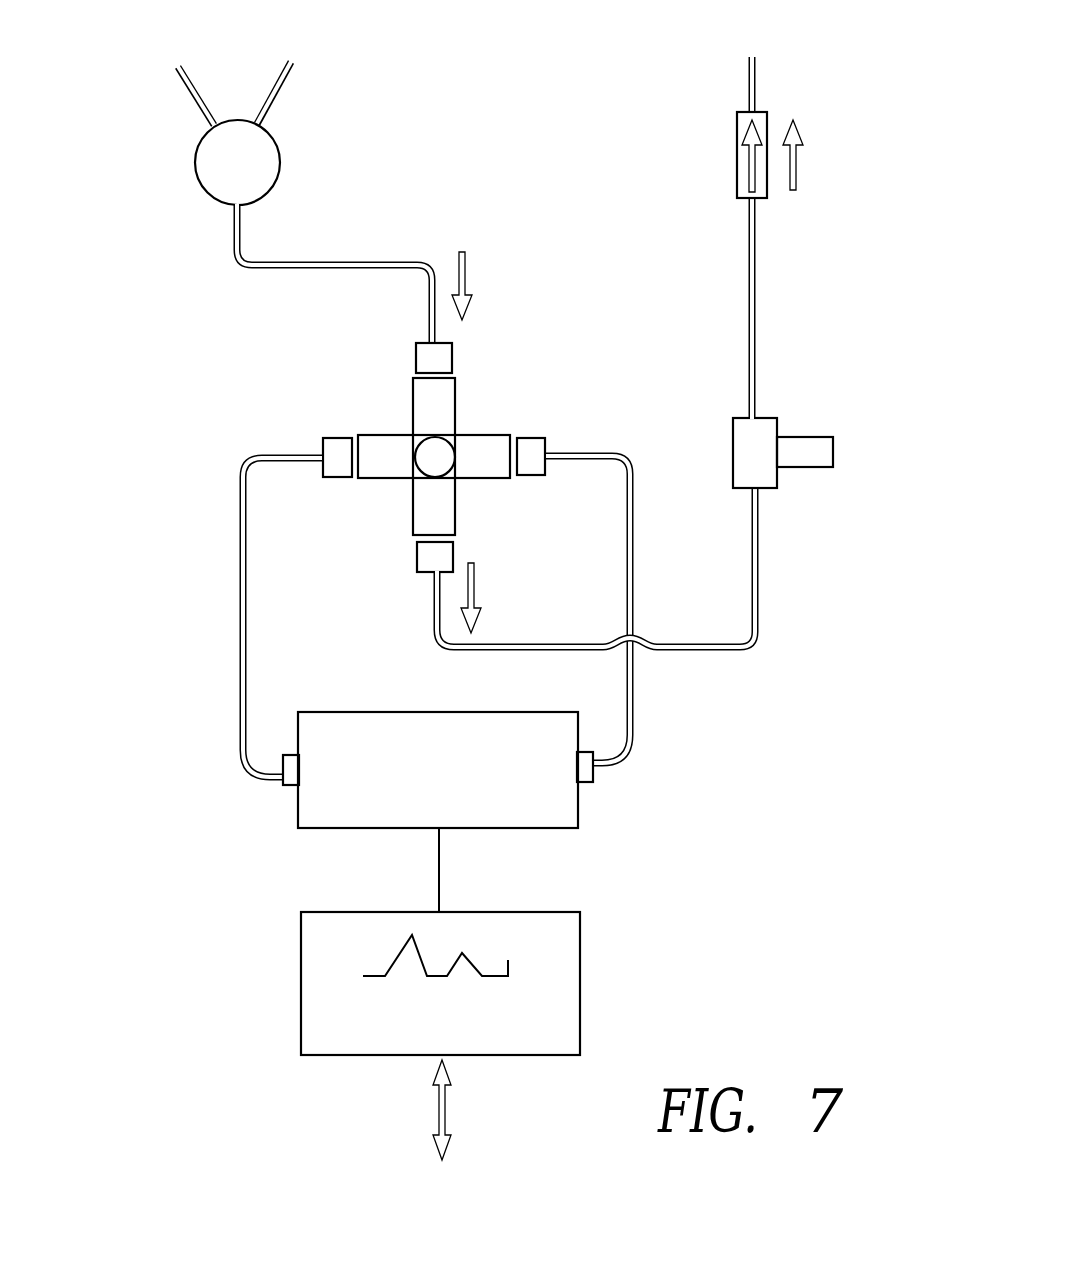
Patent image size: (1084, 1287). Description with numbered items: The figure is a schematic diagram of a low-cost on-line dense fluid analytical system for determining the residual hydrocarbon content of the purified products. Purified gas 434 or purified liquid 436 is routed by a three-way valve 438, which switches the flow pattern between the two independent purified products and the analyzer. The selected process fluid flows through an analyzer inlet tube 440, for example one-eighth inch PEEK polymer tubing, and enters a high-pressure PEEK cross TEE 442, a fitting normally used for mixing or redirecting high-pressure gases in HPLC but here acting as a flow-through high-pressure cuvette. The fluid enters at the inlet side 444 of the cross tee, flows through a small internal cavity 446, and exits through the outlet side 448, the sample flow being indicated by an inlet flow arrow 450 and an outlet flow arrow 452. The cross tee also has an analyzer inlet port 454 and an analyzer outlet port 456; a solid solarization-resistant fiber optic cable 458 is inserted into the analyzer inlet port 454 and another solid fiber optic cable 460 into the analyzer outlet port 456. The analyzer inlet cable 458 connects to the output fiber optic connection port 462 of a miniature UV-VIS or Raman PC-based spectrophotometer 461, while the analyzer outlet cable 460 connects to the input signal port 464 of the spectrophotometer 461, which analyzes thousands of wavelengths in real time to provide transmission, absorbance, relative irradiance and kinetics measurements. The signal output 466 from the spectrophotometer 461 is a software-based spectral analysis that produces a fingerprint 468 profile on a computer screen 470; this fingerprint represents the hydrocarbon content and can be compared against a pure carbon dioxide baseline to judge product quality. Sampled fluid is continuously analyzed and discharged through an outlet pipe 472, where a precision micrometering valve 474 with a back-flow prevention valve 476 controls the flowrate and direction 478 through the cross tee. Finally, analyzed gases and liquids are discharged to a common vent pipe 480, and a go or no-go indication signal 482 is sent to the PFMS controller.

The purified gas 434 is at (172, 66).
The purified liquid 436 is at (297, 63).
The 3-way valve 438 is at (195, 162).
The analyzer inlet tube 440 is at (354, 268).
The PEEK cross TEE 442 is at (413, 397).
The inlet side of the PEEK cross tee 444 is at (424, 343).
The internal cavity 446 is at (428, 450).
The outlet side of the PEEK cross TEE 448 is at (428, 563).
The inlet flow arrow 450 is at (466, 275).
The outlet flow arrow 452 is at (474, 586).
The analyzer inlet port 454 is at (338, 467).
The analyzer outlet port 456 is at (532, 465).
The fiber optic cable 458 is at (243, 600).
The fiber optic cable 460 is at (633, 525).
The spectrophotometer 461 is at (334, 735).
The output fiber optic connection port 462 is at (283, 780).
The input signal port 464 is at (594, 779).
The signal output 466 is at (441, 870).
The fingerprint 468 is at (508, 960).
The computer screen 470 is at (343, 935).
The outlet pipe 472 is at (755, 565).
The micrometering valve 474 is at (738, 428).
The back-flow prevention valve 476 is at (740, 126).
The flow direction 478 is at (795, 160).
The common vent pipe 480 is at (740, 50).
The go or no-go indication signal 482 is at (445, 1110).